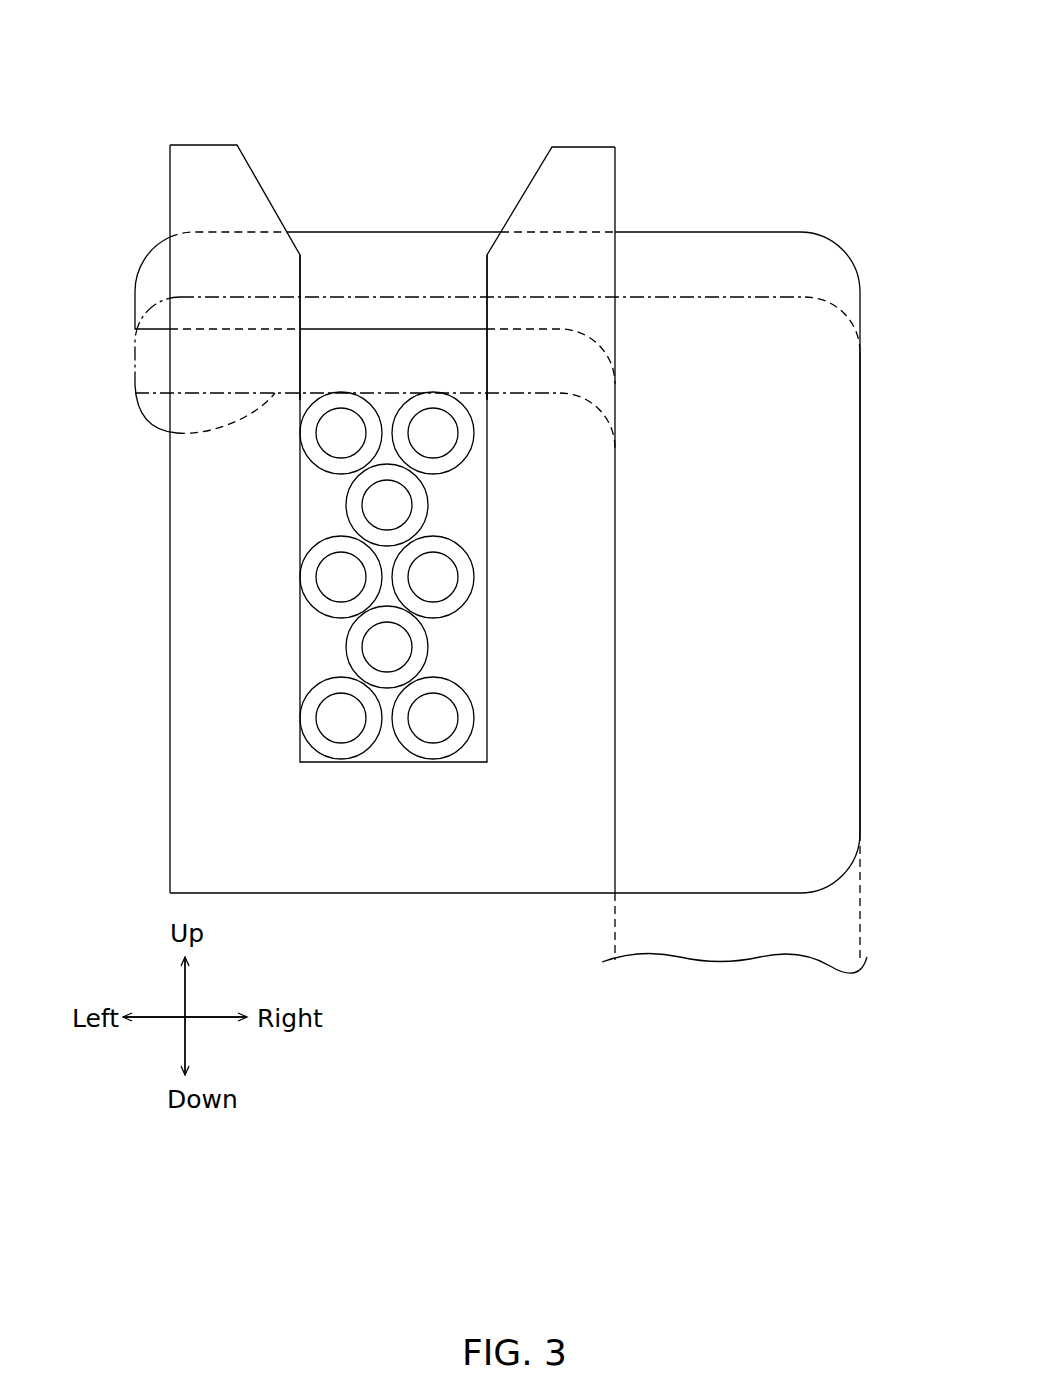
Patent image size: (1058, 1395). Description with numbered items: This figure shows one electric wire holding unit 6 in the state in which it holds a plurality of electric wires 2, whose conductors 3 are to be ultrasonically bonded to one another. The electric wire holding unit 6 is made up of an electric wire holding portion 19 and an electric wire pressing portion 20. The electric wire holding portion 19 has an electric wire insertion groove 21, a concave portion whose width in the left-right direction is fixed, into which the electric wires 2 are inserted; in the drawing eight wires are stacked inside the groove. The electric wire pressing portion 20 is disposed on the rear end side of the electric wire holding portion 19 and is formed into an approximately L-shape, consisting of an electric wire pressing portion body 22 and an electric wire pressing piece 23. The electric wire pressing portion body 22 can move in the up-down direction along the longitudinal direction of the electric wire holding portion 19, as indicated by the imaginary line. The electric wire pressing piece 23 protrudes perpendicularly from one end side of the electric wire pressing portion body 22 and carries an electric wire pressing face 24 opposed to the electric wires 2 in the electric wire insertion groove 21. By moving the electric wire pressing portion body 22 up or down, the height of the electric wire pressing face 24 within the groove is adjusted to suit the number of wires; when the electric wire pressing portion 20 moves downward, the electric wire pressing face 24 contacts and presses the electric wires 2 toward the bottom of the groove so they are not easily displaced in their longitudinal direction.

The electric wire 2 is at (342, 498).
The conductor 3 is at (372, 512).
The electric wire holding unit 6 is at (690, 70).
The electric wire holding portion 19 is at (167, 150).
The electric wire pressing portion 20 is at (769, 294).
The electric wire insertion groove 21 is at (300, 670).
The electric wire pressing portion body 22 is at (860, 883).
The electric wire pressing piece 23 is at (369, 294).
The electric wire pressing face 24 is at (333, 331).